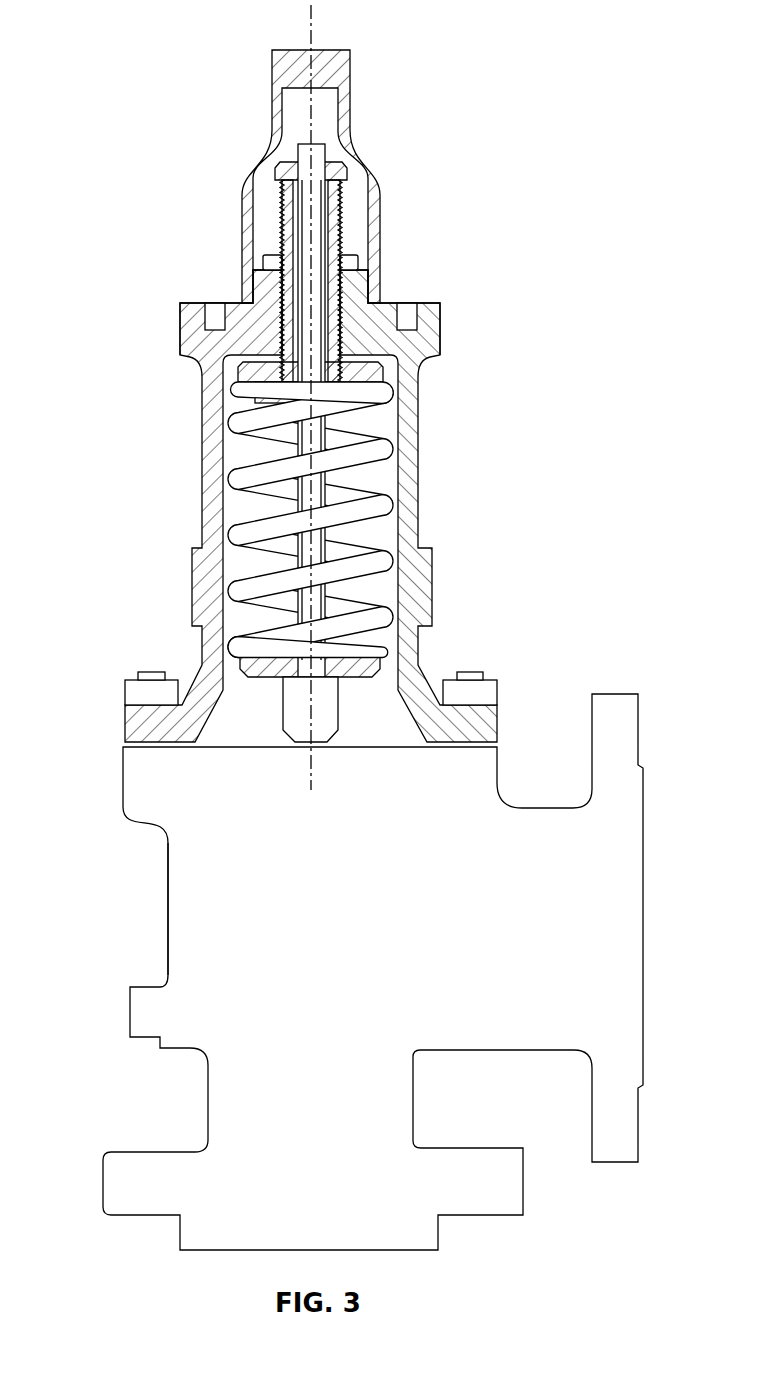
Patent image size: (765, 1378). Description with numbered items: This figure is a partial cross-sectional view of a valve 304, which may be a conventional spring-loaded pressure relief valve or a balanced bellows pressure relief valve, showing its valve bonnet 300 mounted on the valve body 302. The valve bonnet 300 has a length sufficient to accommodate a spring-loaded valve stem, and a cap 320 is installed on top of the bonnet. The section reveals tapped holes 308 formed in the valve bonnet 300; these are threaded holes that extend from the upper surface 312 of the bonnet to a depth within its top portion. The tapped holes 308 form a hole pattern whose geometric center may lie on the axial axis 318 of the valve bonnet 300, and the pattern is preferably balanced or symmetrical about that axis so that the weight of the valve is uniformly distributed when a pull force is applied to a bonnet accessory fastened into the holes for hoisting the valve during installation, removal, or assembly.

The valve bonnet 300 is at (420, 444).
The valve body 302 is at (122, 768).
The valve 304 is at (168, 892).
The tapped holes 308 is at (210, 302).
The upper surface 312 is at (436, 302).
The axial axis 318 is at (314, 25).
The cap 320 is at (381, 196).